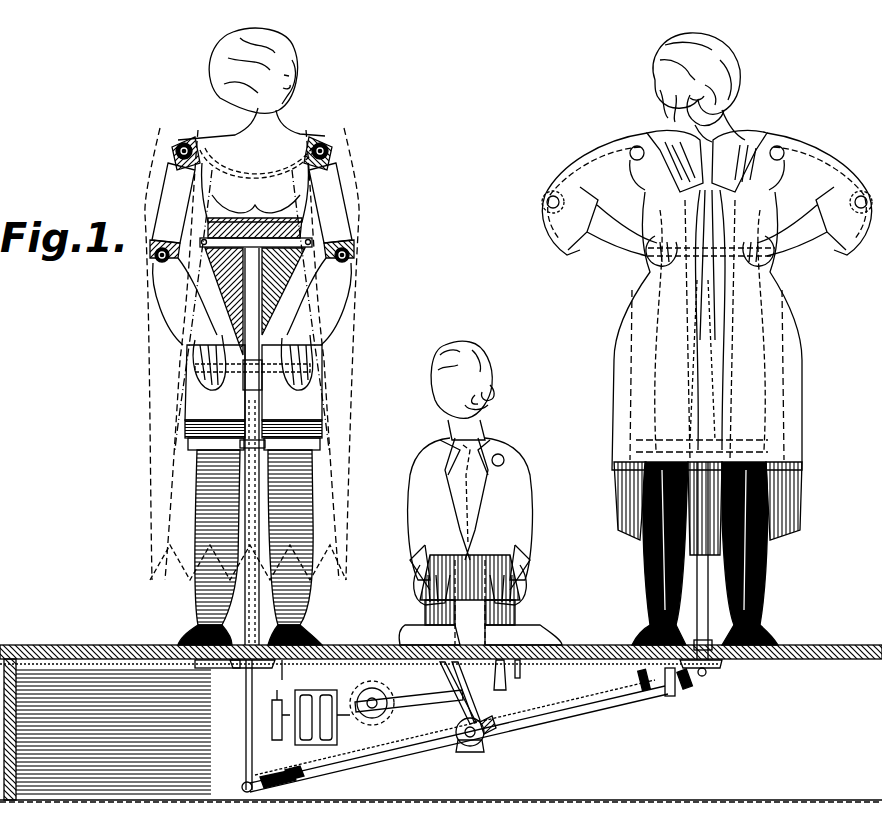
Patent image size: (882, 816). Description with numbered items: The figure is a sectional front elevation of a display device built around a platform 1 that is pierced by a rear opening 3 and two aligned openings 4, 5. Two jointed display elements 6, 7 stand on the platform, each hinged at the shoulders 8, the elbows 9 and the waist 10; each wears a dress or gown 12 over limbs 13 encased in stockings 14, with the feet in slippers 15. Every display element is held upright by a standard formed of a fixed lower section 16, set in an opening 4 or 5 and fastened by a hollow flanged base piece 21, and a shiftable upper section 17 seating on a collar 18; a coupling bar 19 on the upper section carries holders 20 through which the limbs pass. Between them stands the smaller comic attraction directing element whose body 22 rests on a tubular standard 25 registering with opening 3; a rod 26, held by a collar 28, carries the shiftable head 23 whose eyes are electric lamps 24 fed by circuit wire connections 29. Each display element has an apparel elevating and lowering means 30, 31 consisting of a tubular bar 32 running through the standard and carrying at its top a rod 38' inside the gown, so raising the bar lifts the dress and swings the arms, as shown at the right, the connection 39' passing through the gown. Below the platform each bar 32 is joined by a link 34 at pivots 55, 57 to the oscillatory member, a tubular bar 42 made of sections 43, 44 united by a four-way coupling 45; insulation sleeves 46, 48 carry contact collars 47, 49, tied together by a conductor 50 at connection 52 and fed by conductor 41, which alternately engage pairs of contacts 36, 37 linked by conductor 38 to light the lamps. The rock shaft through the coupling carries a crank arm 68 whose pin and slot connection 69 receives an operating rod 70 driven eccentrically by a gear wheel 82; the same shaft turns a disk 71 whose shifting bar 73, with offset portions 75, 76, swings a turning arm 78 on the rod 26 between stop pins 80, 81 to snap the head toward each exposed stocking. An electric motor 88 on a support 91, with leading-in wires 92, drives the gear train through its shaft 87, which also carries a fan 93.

The platform 1 is at (845, 655).
The vertically disposed opening 3 is at (253, 358).
The vertically disposed opening 4 is at (712, 652).
The vertically disposed opening 5 is at (244, 648).
The display element 6 is at (345, 256).
The display element 7 is at (715, 148).
The shoulder joint 8 is at (184, 143).
The elbow joint 9 is at (152, 260).
The waist joint 10 is at (312, 242).
The dress or gown 12 is at (350, 525).
The limb 13 is at (318, 428).
The stocking 14 is at (200, 598).
The slipper 15 is at (182, 638).
The fixed lower section 16 is at (245, 508).
The shiftable upper section 17 is at (190, 442).
The collar 18 is at (300, 470).
The coupling bar 19 is at (200, 480).
The holder 20 is at (200, 456).
The hollow flanged base piece 21 is at (262, 655).
The body 22 is at (535, 498).
The shiftable head 23 is at (505, 402).
The electric lamp 24 is at (480, 385).
The tubular standard 25 is at (415, 615).
The rod 26 is at (445, 400).
The collar 28 is at (448, 415).
The circuit wire connections 29 is at (535, 590).
The apparel elevating and lowering means 30 is at (246, 748).
The apparel elevating and lowering means 31 is at (695, 345).
The tubular bar 32 is at (270, 676).
The link 34 is at (738, 672).
The pair of contacts 36 is at (280, 700).
The pair of contacts 37 is at (668, 696).
The conductor 38 is at (580, 679).
The rod 38' is at (225, 413).
The thigh member 39' is at (209, 400).
The conductor 41 is at (349, 743).
The tubular bar 42 is at (444, 750).
The section 43 is at (392, 750).
The section 44 is at (556, 712).
The four-way coupling 45 is at (465, 750).
The sleeve of insulation 46 is at (300, 770).
The contact collar 47 is at (280, 785).
The sleeve of insulation 48 is at (660, 690).
The contact collar 49 is at (684, 688).
The conductor 50 is at (380, 720).
The connection 52 is at (650, 674).
The pivotal connection 55 is at (256, 810).
The pivotal connection 57 is at (706, 676).
The crank arm 68 is at (470, 712).
The pin and slot connection 69 is at (449, 693).
The operating rod 70 is at (425, 700).
The disk 71 is at (485, 745).
The shifting bar 73 is at (511, 685).
The off set portion 75 is at (511, 695).
The off set portion 76 is at (404, 705).
The turning arm 78 is at (388, 629).
The stop pin 80 is at (403, 681).
The stop pin 81 is at (520, 676).
The gear wheel 82 is at (385, 718).
The motor shaft 87 is at (267, 724).
The electric motor 88 is at (316, 713).
The support 91 is at (325, 760).
The leading-in wires 92 is at (369, 727).
The fan 93 is at (278, 718).